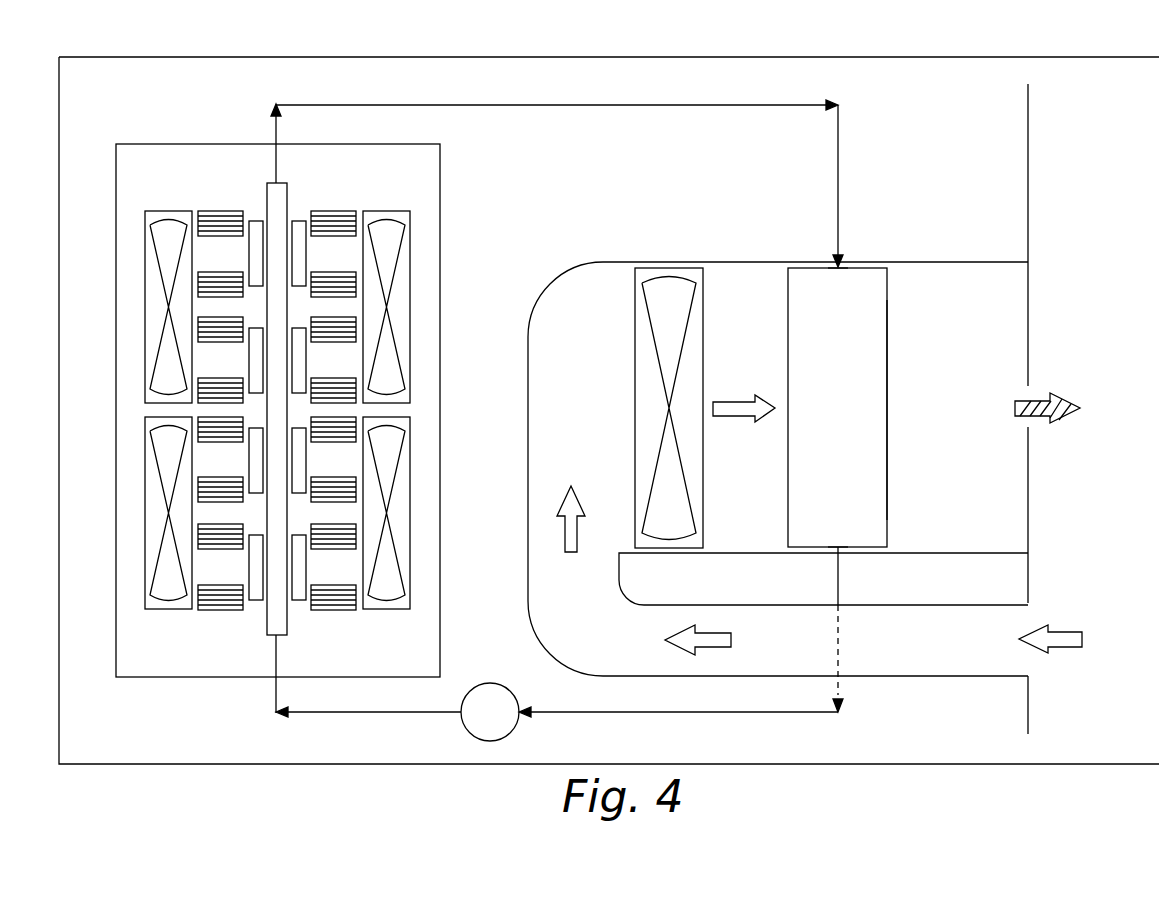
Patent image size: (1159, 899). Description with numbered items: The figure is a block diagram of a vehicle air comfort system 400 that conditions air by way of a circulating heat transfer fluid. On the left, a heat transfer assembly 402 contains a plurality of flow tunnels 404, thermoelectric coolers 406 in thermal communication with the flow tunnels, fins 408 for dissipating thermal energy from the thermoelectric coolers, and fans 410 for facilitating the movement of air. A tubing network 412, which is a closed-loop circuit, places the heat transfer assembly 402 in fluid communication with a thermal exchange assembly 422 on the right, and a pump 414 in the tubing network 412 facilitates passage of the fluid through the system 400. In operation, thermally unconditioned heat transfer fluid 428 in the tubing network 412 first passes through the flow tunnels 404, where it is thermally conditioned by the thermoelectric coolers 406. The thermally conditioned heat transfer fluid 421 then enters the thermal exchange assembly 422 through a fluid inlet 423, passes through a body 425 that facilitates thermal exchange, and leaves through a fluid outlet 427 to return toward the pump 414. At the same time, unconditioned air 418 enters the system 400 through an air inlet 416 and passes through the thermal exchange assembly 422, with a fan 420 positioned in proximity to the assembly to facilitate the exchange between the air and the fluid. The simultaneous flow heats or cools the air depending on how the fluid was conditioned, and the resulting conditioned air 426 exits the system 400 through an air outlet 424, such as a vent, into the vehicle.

The air comfort system 400 is at (148, 45).
The heat transfer assembly 402 is at (193, 143).
The flow tunnels 404 is at (283, 183).
The thermoelectric coolers 406 is at (254, 220).
The fins 408 is at (338, 211).
The fans 410 is at (384, 610).
The tubing network 412 is at (252, 721).
The pump 414 is at (490, 683).
The air inlet 416 is at (1025, 660).
The unconditioned air 418 is at (732, 395).
The fan 420 is at (635, 374).
The thermally conditioned heat transfer fluid 421 is at (663, 105).
The thermal exchange assembly 422 is at (894, 323).
The fluid inlet 423 is at (836, 265).
The air outlet 424 is at (1028, 393).
The body 425 is at (887, 492).
The conditioned air 426 is at (1014, 407).
The fluid outlet 427 is at (836, 548).
The unconditioned heat transfer fluid 428 is at (663, 712).